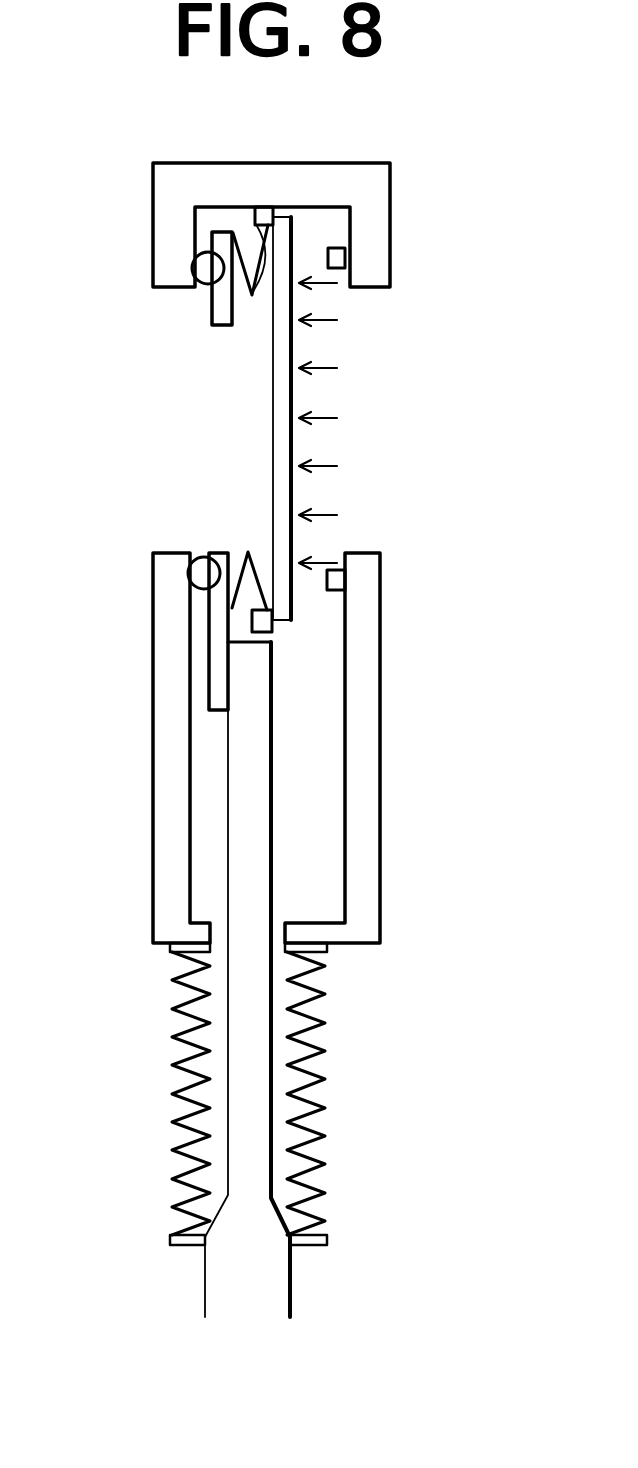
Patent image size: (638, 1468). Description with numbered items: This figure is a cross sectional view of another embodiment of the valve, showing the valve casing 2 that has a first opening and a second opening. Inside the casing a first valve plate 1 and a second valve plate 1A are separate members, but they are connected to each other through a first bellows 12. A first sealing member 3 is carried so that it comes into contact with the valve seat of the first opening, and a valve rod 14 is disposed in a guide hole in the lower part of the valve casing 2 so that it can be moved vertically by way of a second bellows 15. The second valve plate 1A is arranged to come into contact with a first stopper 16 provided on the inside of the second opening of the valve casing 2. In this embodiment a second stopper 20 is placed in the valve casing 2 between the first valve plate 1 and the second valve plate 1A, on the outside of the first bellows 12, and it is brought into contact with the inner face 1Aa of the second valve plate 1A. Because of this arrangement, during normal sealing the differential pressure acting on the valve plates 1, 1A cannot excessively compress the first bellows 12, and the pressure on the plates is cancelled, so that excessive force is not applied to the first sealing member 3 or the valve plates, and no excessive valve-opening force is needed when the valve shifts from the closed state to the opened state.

The first valve plate 1 is at (222, 630).
The second valve plate 1A is at (278, 479).
The inner face of the second valve plate 1Aa is at (275, 390).
The valve casing 2 is at (173, 205).
The first sealing member 3 is at (197, 268).
The first bellows 12 is at (290, 262).
The valve rod 14 is at (250, 853).
The second bellows 15 is at (183, 1133).
The first stopper 16 is at (342, 270).
The second stopper 20 is at (290, 262).